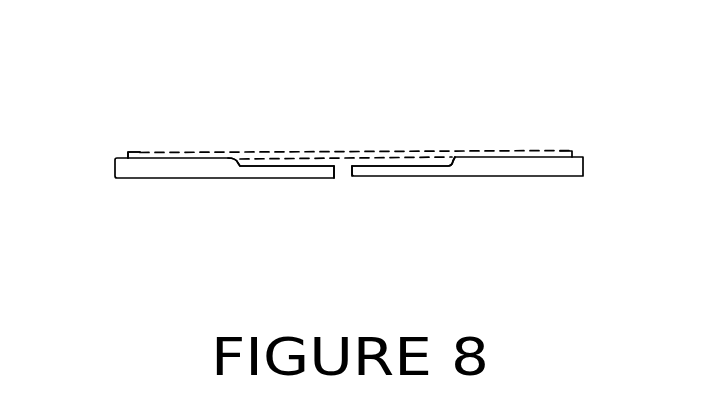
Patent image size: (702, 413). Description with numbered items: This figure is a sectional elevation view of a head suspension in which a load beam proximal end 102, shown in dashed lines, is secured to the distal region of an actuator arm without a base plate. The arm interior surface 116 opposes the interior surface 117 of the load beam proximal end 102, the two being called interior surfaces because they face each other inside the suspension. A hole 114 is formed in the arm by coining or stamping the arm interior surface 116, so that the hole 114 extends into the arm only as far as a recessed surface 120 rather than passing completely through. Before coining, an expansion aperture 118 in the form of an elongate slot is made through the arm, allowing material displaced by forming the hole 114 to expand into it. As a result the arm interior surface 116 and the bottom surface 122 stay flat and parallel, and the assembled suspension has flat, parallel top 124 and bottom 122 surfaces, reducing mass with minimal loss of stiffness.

The load beam proximal end 102 is at (213, 152).
The hole 114 is at (393, 157).
The arm interior surface 116 is at (513, 152).
The interior surface of the load beam proximal end 117 is at (175, 158).
The expansion aperture 118 is at (343, 186).
The recessed surface 120 is at (286, 166).
The bottom surface 122 is at (417, 176).
The top surface 124 is at (148, 152).